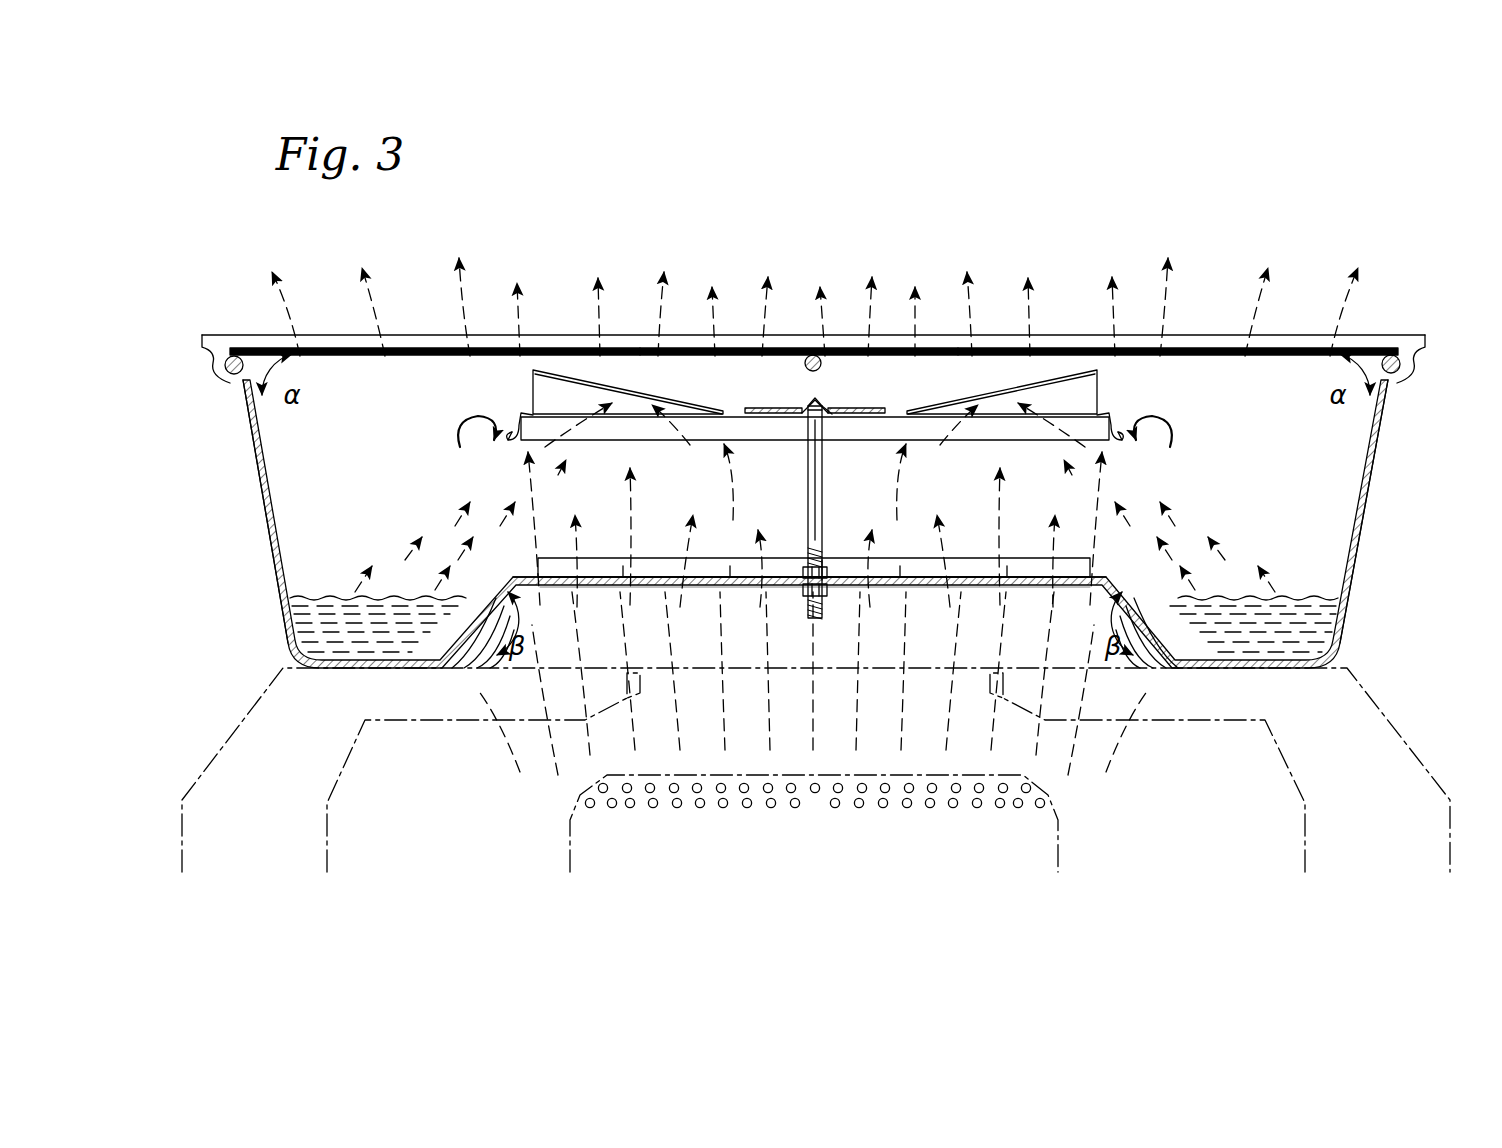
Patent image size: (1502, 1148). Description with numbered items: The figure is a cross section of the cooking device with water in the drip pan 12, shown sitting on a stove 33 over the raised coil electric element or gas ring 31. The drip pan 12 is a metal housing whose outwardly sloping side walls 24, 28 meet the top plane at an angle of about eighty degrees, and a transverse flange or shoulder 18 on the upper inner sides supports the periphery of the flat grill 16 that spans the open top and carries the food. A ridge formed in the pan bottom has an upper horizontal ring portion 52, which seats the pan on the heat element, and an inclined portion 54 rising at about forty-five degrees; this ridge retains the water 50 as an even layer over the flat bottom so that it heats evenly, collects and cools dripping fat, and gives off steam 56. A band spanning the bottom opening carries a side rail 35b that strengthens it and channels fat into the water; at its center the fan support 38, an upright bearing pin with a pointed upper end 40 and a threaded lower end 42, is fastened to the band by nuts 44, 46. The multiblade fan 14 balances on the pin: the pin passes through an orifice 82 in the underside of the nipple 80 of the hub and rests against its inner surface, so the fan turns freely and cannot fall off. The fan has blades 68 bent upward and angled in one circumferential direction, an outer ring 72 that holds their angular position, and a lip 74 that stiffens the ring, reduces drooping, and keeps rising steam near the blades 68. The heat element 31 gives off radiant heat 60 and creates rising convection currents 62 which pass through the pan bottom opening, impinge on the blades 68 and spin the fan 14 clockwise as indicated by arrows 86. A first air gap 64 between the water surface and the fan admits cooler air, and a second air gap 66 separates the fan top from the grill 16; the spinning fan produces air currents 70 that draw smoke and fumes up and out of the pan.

The drip pan 12 is at (1383, 440).
The multiblade fan 14 is at (545, 437).
The grill 16 is at (1213, 350).
The shoulder 18 is at (225, 378).
The side wall 24 is at (272, 538).
The side wall 28 is at (1357, 545).
The stove element 31 is at (575, 818).
The stove 33 is at (265, 702).
The side rail 35b is at (1012, 572).
The fan support 38 is at (808, 484).
The upper end of fan support 40 is at (808, 412).
The lower end of fan support 42 is at (806, 562).
The nut 44 is at (828, 572).
The nut 46 is at (828, 598).
The water 50 is at (300, 622).
The upper horizontal ring portion 52 is at (533, 580).
The inclined portion 54 is at (505, 592).
The steam 56 is at (375, 578).
The radiant heat 60 is at (528, 752).
The convection current air 62 is at (580, 545).
The first air gap 64 is at (844, 530).
The second air gap 66 is at (815, 392).
The fan blades 68 is at (642, 354).
The air currents 70 is at (455, 293).
The outer ring 72 is at (519, 413).
The lip 74 is at (510, 420).
The nipple 80 is at (800, 398).
The orifice 82 is at (823, 408).
The arrows 86 is at (458, 446).